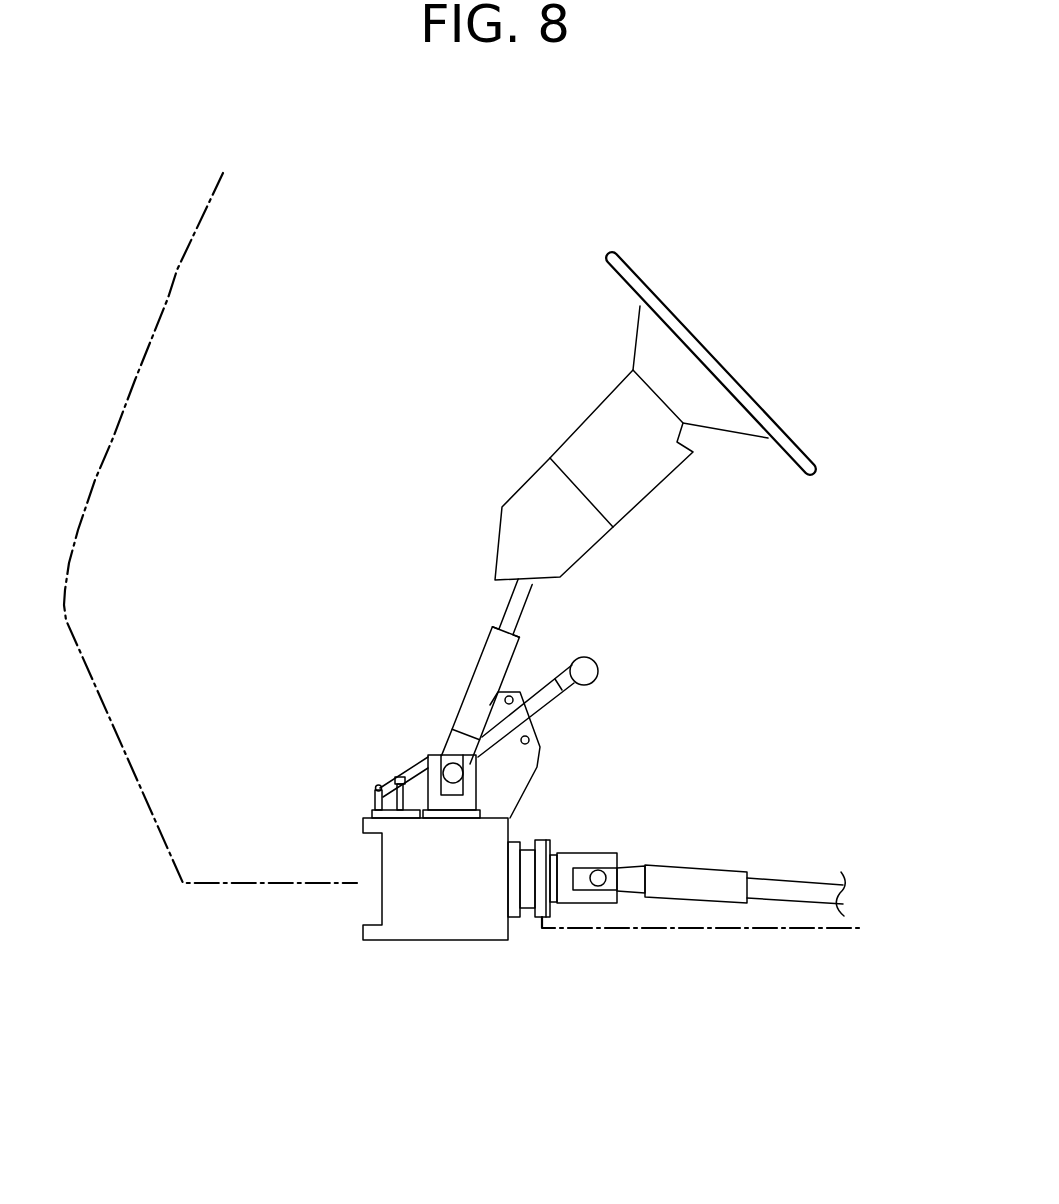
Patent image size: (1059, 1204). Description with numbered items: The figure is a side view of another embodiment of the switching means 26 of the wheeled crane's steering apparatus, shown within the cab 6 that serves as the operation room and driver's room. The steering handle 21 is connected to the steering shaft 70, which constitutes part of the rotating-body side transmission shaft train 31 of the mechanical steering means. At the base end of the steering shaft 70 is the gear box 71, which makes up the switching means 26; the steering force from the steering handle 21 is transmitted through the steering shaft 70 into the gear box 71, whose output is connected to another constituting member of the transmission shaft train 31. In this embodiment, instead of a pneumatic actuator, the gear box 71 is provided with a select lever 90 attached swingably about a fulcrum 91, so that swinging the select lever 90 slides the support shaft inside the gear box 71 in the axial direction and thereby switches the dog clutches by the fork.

The cab 6 is at (177, 276).
The steering handle 21 is at (670, 298).
The switching means 26 is at (385, 903).
The rotating-body side transmission shaft train 31 is at (797, 887).
The steering shaft 70 is at (518, 603).
The gear box 71 is at (440, 940).
The select lever 90 is at (545, 696).
The fulcrum 91 is at (378, 787).